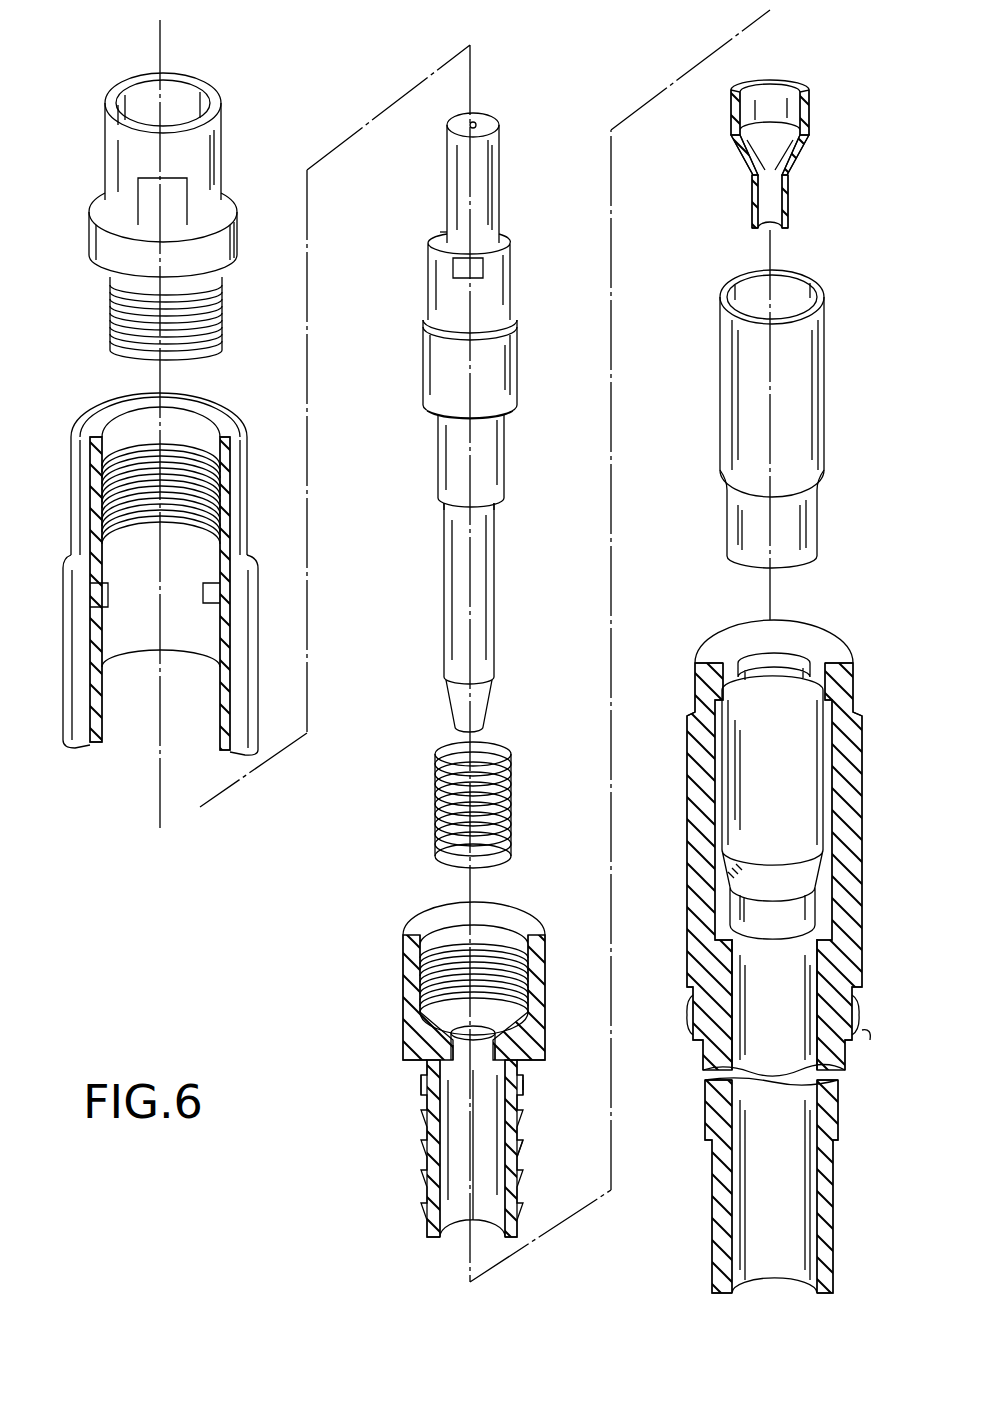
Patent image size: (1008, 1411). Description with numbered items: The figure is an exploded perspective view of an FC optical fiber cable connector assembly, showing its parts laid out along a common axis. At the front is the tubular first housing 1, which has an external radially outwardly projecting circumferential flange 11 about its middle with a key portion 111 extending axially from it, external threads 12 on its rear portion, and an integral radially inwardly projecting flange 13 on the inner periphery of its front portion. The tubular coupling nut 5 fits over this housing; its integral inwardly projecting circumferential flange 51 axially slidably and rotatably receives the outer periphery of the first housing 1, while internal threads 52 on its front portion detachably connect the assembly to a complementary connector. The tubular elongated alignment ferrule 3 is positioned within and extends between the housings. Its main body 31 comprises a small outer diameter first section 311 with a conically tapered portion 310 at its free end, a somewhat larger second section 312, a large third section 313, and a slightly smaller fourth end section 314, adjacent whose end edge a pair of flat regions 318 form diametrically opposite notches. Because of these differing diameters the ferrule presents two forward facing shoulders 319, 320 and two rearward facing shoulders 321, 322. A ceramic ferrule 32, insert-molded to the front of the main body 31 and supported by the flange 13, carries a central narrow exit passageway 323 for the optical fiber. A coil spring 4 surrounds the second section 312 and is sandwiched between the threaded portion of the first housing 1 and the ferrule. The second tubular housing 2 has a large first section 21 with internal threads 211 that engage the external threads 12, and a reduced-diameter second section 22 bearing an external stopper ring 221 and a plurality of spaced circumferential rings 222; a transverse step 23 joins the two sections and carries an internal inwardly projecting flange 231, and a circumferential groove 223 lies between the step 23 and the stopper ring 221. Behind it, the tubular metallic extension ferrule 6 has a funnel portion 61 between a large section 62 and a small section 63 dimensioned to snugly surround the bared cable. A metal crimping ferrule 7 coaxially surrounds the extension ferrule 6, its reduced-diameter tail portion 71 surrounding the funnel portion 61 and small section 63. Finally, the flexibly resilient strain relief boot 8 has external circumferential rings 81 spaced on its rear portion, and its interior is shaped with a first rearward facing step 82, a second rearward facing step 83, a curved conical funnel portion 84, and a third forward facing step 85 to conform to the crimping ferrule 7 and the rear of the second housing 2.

The first housing 1 is at (163, 189).
The circumferential flange 11 is at (100, 233).
The key portion 111 is at (175, 212).
The external threads 12 is at (118, 305).
The inner flange 13 is at (148, 128).
The coupling nut 5 is at (160, 557).
The circumferential flange 51 is at (108, 594).
The internal threads 52 is at (137, 462).
The alignment ferrule 3 is at (468, 394).
The main body 31 is at (468, 318).
The ceramic ferrule 32 is at (497, 150).
The exit passageway 323 is at (474, 124).
The fourth section 314 is at (505, 260).
The flat regions 318 is at (456, 268).
The forward facing shoulder 319 is at (440, 232).
The forward facing shoulder 320 is at (430, 312).
The third section 313 is at (519, 382).
The rearward facing shoulder 321 is at (432, 420).
The second section 312 is at (505, 462).
The rearward facing shoulder 322 is at (446, 504).
The first section 311 is at (494, 606).
The conically tapered portion 310 is at (488, 712).
The coil spring 4 is at (512, 787).
The second housing 2 is at (464, 1045).
The internal threads 211 is at (455, 945).
The first section 21 is at (440, 1012).
The inner flange 231 is at (498, 1033).
The step 23 is at (430, 1058).
The second section 22 is at (463, 1148).
The stopper ring 221 is at (522, 1090).
The circumferential rings 222 is at (517, 1150).
The circumferential groove 223 is at (418, 1085).
The extension ferrule 6 is at (799, 130).
The funnel portion 61 is at (806, 158).
The large section 62 is at (810, 112).
The small section 63 is at (790, 205).
The crimping ferrule 7 is at (792, 419).
The tail portion 71 is at (808, 528).
The strain relief boot 8 is at (765, 956).
The circumferential rings 81 is at (874, 1049).
The first rearward facing step 82 is at (722, 688).
The second rearward facing step 83 is at (722, 728).
The conical funnel portion 84 is at (736, 876).
The third forward facing step 85 is at (742, 940).